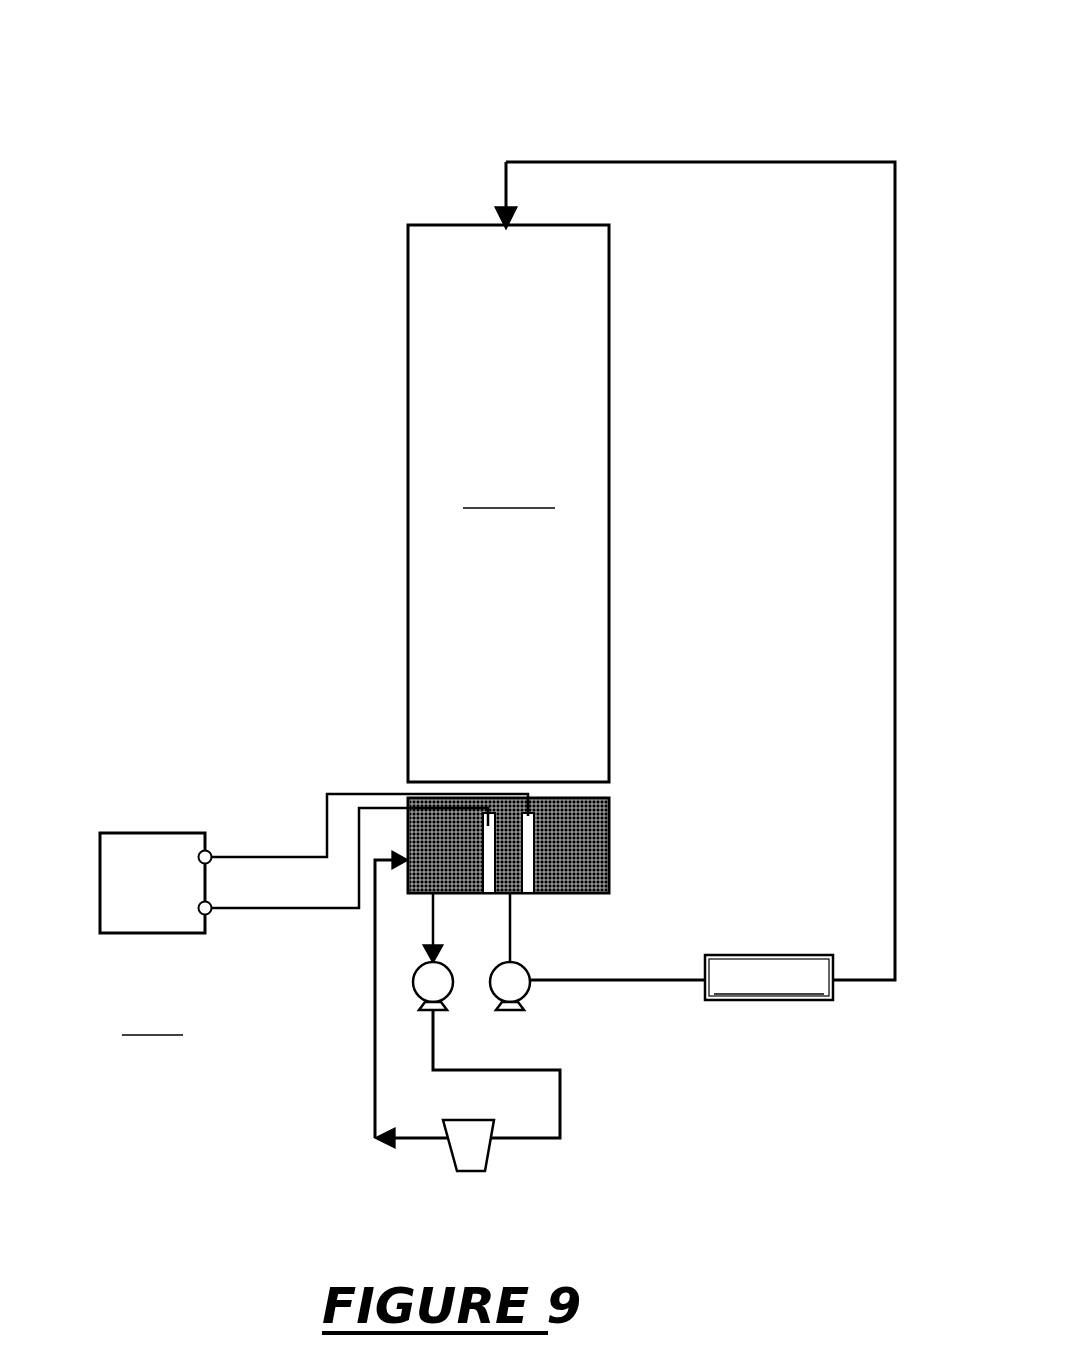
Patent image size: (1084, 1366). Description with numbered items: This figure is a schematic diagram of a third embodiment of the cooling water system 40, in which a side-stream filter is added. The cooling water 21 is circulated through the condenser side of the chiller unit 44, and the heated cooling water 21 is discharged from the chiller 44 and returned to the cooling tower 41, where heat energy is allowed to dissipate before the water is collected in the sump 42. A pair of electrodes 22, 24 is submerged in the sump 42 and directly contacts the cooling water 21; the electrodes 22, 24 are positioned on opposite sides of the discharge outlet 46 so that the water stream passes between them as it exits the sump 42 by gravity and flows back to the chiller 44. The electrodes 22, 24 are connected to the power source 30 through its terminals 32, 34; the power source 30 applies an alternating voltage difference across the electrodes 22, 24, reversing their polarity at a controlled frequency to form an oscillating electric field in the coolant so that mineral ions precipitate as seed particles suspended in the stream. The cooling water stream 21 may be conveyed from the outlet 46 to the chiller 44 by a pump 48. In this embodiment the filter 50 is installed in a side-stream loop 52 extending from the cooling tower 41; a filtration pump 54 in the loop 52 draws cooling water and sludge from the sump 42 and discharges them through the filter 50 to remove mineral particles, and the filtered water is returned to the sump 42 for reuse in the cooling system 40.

The cooling water system 40 is at (385, 95).
The cooling tower 41 is at (458, 306).
The sump 42 is at (610, 875).
The cooling water 21 is at (585, 850).
The electrode 22 is at (487, 822).
The electrode 24 is at (530, 843).
The power source 30 is at (165, 853).
The terminal 32 is at (207, 916).
The terminal 34 is at (205, 850).
The chiller unit 44 is at (769, 960).
The discharge outlet 46 is at (512, 897).
The pump 48 is at (515, 975).
The filter 50 is at (470, 1158).
The side-stream loop 52 is at (375, 1052).
The filtration pump 54 is at (440, 990).